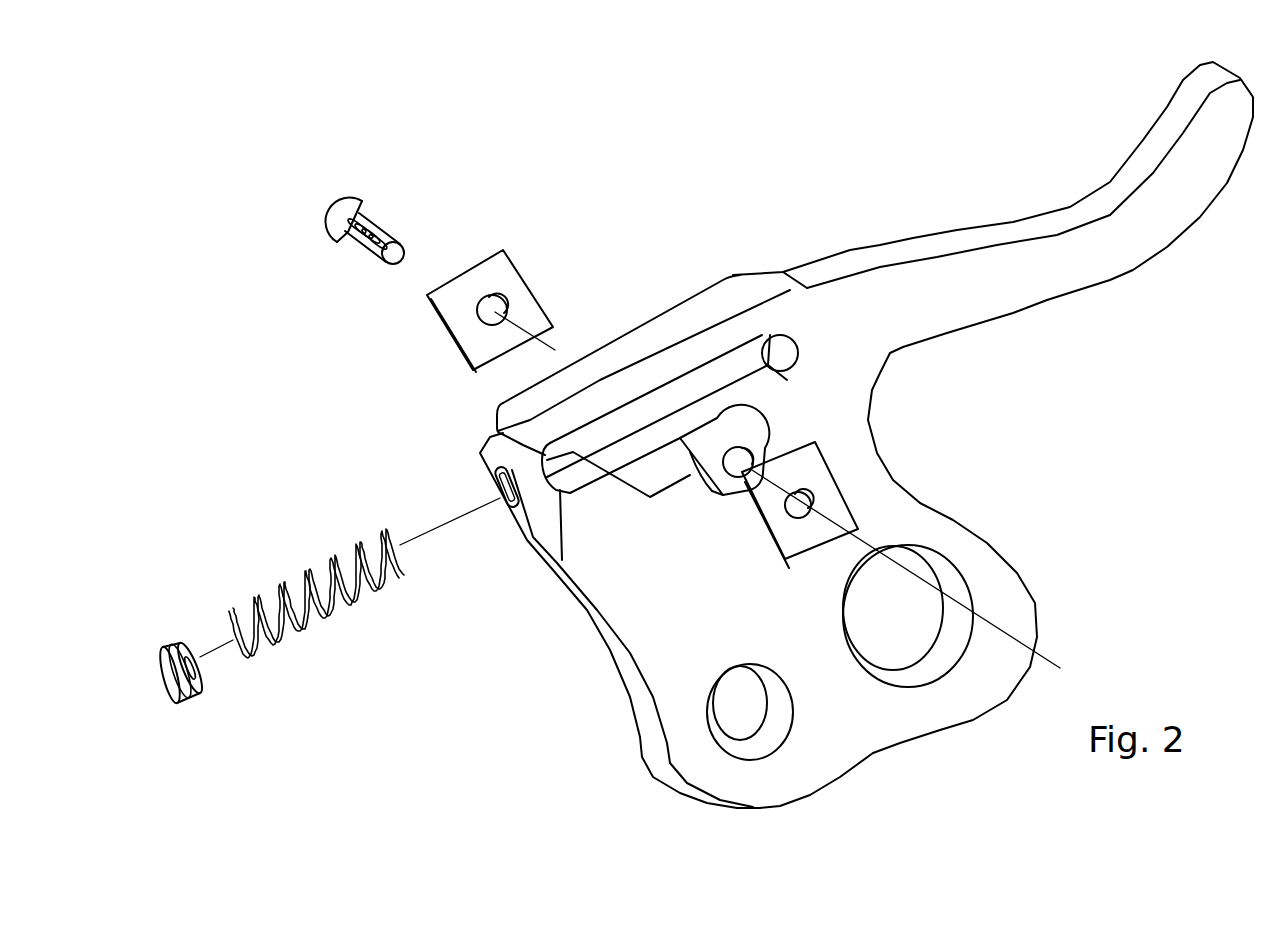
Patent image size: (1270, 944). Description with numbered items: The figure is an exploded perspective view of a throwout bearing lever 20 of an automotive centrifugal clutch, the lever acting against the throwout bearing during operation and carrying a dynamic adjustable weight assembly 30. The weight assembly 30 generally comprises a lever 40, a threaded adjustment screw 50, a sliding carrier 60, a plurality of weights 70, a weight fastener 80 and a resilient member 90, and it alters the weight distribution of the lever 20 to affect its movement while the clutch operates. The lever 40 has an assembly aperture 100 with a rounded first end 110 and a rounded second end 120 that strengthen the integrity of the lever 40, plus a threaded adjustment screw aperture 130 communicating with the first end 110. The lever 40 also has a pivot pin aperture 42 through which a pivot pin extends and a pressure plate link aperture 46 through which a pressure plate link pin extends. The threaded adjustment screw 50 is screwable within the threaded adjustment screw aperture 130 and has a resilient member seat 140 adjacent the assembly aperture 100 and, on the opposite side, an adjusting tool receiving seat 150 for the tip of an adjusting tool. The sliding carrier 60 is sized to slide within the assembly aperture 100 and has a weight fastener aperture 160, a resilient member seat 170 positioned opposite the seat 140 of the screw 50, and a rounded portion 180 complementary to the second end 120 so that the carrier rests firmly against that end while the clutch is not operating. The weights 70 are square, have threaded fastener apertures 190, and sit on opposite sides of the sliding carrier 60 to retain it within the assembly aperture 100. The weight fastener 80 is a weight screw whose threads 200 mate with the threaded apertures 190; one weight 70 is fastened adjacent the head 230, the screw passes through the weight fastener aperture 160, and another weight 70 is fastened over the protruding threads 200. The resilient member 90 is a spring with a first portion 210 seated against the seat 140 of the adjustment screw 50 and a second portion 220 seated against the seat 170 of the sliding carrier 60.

The throwout bearing lever 20 is at (811, 68).
The dynamic adjustable weight assembly 30 is at (380, 360).
The lever 40 is at (1010, 600).
The pivot pin aperture 42 is at (727, 713).
The pressure plate link aperture 46 is at (903, 640).
The threaded adjustment screw 50 is at (193, 690).
The sliding carrier 60 is at (743, 440).
The weights 70 is at (518, 290).
The weight fastener 80 is at (397, 245).
The resilient member 90 is at (323, 610).
The assembly aperture 100 is at (680, 393).
The first end 110 is at (562, 560).
The second end 120 is at (778, 355).
The threaded adjustment screw aperture 130 is at (503, 502).
The resilient member seat 140 is at (190, 648).
The adjusting tool receiving seat 150 is at (182, 693).
The weight fastener aperture 160 is at (735, 470).
The resilient member seat 170 is at (695, 452).
The rounded portion 180 is at (765, 455).
The threaded fastener apertures 190 is at (497, 305).
The threads 200 is at (370, 220).
The first portion 210 is at (260, 668).
The second portion 220 is at (393, 528).
The head 230 is at (332, 242).